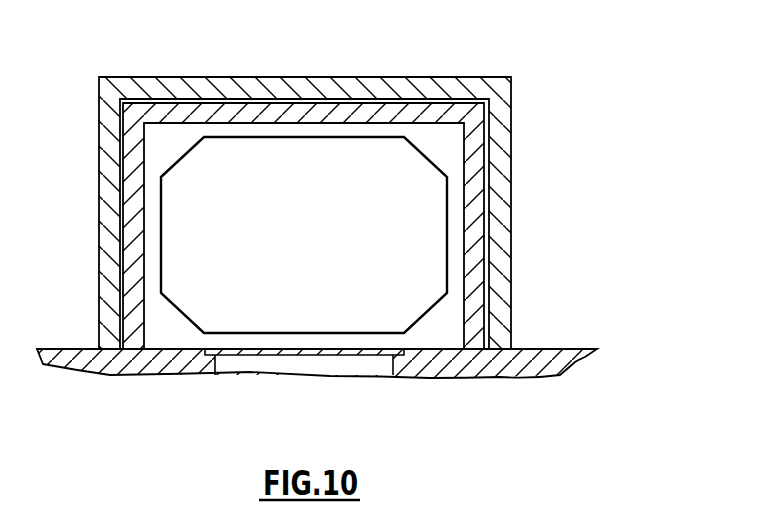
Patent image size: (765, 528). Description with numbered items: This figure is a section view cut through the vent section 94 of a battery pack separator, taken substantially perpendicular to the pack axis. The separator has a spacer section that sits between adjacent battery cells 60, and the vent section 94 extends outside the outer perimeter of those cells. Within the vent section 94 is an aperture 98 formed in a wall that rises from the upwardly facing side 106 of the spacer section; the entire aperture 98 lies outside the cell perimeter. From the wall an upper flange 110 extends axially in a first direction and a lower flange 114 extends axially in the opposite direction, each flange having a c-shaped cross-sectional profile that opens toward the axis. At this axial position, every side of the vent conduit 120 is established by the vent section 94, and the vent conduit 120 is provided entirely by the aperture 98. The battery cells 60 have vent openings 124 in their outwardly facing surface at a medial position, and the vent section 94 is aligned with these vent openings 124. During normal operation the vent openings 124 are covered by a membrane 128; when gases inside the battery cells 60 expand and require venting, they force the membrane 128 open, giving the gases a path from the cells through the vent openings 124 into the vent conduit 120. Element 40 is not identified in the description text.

The vent section 94 is at (586, 96).
The upper flange 110 is at (500, 213).
The lower flange 114 is at (477, 287).
The aperture 98 is at (358, 298).
The vent conduit 120 is at (327, 247).
The vent openings 124 is at (267, 343).
The upwardly facing side 106 is at (565, 349).
The battery cells 60 is at (110, 363).
The substrate 40 is at (163, 348).
The membrane 128 is at (297, 350).